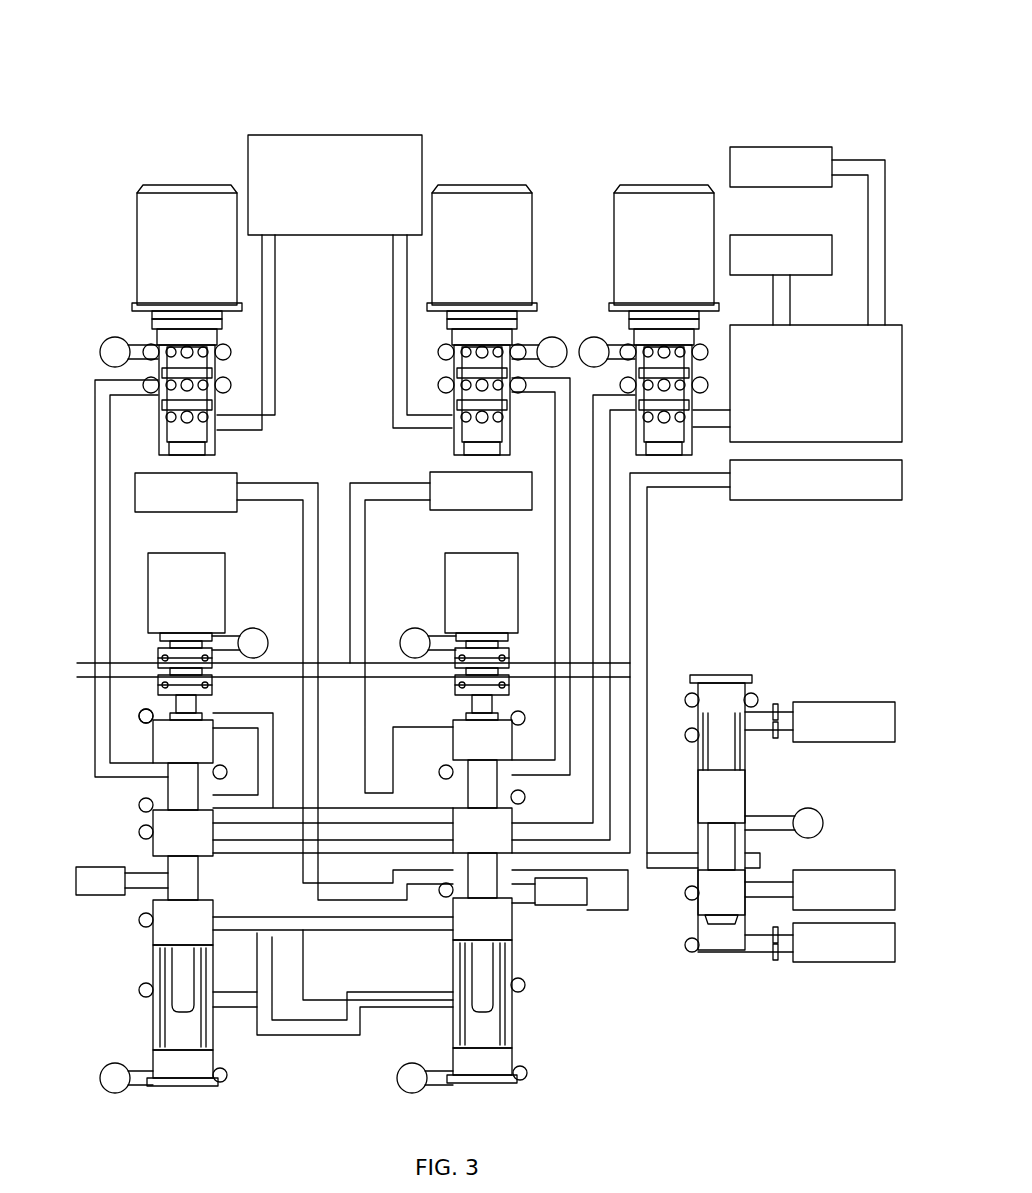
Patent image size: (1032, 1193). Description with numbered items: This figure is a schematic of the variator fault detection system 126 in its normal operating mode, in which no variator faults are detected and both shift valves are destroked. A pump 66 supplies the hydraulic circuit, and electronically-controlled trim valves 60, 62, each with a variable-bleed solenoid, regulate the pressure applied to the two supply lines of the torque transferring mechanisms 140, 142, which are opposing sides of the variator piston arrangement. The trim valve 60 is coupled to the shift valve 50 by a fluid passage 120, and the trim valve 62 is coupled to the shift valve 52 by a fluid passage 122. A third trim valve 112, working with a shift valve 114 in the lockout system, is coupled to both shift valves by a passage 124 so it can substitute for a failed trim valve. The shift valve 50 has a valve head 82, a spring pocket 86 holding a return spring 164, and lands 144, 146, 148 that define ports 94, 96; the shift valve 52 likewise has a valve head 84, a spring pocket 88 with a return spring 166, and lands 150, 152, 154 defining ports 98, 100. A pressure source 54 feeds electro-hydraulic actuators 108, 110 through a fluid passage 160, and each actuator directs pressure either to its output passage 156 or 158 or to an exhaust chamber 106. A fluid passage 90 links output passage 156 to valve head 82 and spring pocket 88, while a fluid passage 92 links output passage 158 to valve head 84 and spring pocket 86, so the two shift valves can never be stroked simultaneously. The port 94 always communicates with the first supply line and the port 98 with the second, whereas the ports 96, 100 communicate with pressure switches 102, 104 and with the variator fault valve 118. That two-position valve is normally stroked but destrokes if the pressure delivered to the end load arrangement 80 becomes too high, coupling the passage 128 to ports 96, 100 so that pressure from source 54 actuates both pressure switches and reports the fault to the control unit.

The shift valve 50 is at (72, 762).
The shift valve 52 is at (570, 1022).
The source of pressurized hydraulic fluid 54 is at (816, 685).
The trim valve 60 is at (122, 178).
The trim valve 62 is at (484, 170).
The pump 66 is at (571, 548).
The end load arrangement 80 is at (844, 722).
The valve head 82 is at (170, 718).
The valve head 84 is at (497, 718).
The spring pocket 86 is at (175, 1025).
The spring pocket 88 is at (490, 1030).
The fluid passage 90 is at (290, 1040).
The fluid passage 92 is at (322, 985).
The port 94 is at (160, 790).
The port 96 is at (160, 880).
The port 98 is at (480, 792).
The port 100 is at (482, 875).
The pressure switch 102 is at (76, 885).
The pressure switch 104 is at (572, 905).
The exhaust chamber 106 is at (108, 340).
The electro-hydraulic actuator 108 is at (186, 636).
The electro-hydraulic actuator 110 is at (481, 636).
The trim valve 112 is at (655, 170).
The shift valve 114 is at (816, 383).
The variator fault valve 118 is at (823, 648).
The fluid passage 120 is at (95, 490).
The fluid passage 122 is at (555, 525).
The passage 124 is at (630, 540).
The variator fault detection system 126 is at (797, 95).
The passage 128 is at (662, 875).
The torque transferring mechanism 140 is at (237, 478).
The torque transferring mechanism 142 is at (430, 478).
The land 144 is at (150, 745).
The land 146 is at (150, 825).
The land 148 is at (155, 932).
The land 150 is at (512, 748).
The land 152 is at (512, 835).
The land 154 is at (515, 935).
The output passage 156 is at (200, 710).
The output passage 158 is at (468, 710).
The fluid passage 160 is at (647, 610).
The return spring 164 is at (155, 972).
The return spring 166 is at (512, 985).